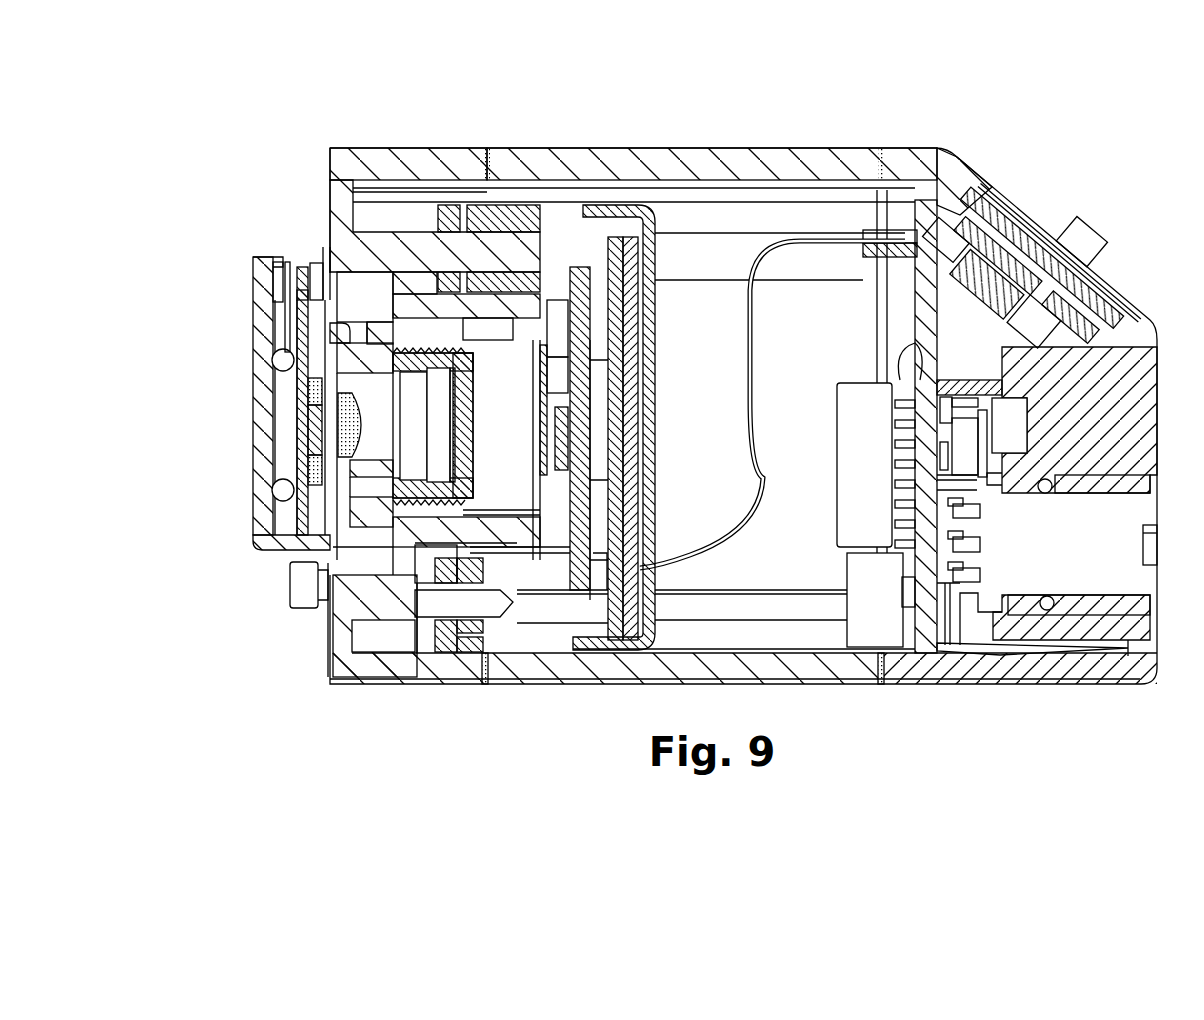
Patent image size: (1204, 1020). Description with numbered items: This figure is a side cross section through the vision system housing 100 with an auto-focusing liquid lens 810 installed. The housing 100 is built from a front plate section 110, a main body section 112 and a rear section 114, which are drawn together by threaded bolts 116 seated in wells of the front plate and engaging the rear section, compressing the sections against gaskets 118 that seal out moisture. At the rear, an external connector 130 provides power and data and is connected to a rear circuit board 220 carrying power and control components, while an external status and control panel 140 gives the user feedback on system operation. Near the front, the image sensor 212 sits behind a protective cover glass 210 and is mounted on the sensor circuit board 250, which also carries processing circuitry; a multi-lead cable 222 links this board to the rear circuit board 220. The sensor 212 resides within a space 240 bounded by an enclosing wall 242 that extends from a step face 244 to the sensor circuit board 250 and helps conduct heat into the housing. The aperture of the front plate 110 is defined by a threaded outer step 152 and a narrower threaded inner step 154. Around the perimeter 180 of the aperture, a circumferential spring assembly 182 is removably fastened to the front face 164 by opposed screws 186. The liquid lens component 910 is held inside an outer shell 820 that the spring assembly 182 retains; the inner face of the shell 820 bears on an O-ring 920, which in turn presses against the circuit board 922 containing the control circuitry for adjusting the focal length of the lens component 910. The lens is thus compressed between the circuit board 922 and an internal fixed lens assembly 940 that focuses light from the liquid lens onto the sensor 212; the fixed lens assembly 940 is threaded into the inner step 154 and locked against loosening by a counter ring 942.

The housing 100 is at (647, 145).
The front plate section 110 is at (422, 167).
The main body section 112 is at (732, 167).
The rear section 114 is at (953, 177).
The threaded bolts 116 is at (760, 225).
The gaskets 118 is at (483, 683).
The external connector 130 is at (1145, 508).
The external status and control panel 140 is at (1033, 220).
The outer step 152 is at (363, 273).
The inner step 154 is at (410, 345).
The front face 164 is at (328, 242).
The perimeter 180 is at (332, 588).
The circumferential spring assembly 182 is at (330, 263).
The screws 186 is at (300, 597).
The cover glass 210 is at (543, 405).
The image sensor 212 is at (565, 432).
The circuit board 220 is at (930, 220).
The multi-lead cable 222 is at (750, 343).
The space 240 is at (460, 425).
The enclosing wall 242 is at (543, 303).
The step face 244 is at (480, 340).
The sensor circuit board 250 is at (478, 248).
The liquid lens 810 is at (247, 498).
The outer shell 820 is at (260, 323).
The liquid lens component 910 is at (318, 470).
The O-ring 920 is at (280, 490).
The circuit board 922 is at (302, 298).
The fixed lens assembly 940 is at (367, 480).
The counter ring 942 is at (375, 470).